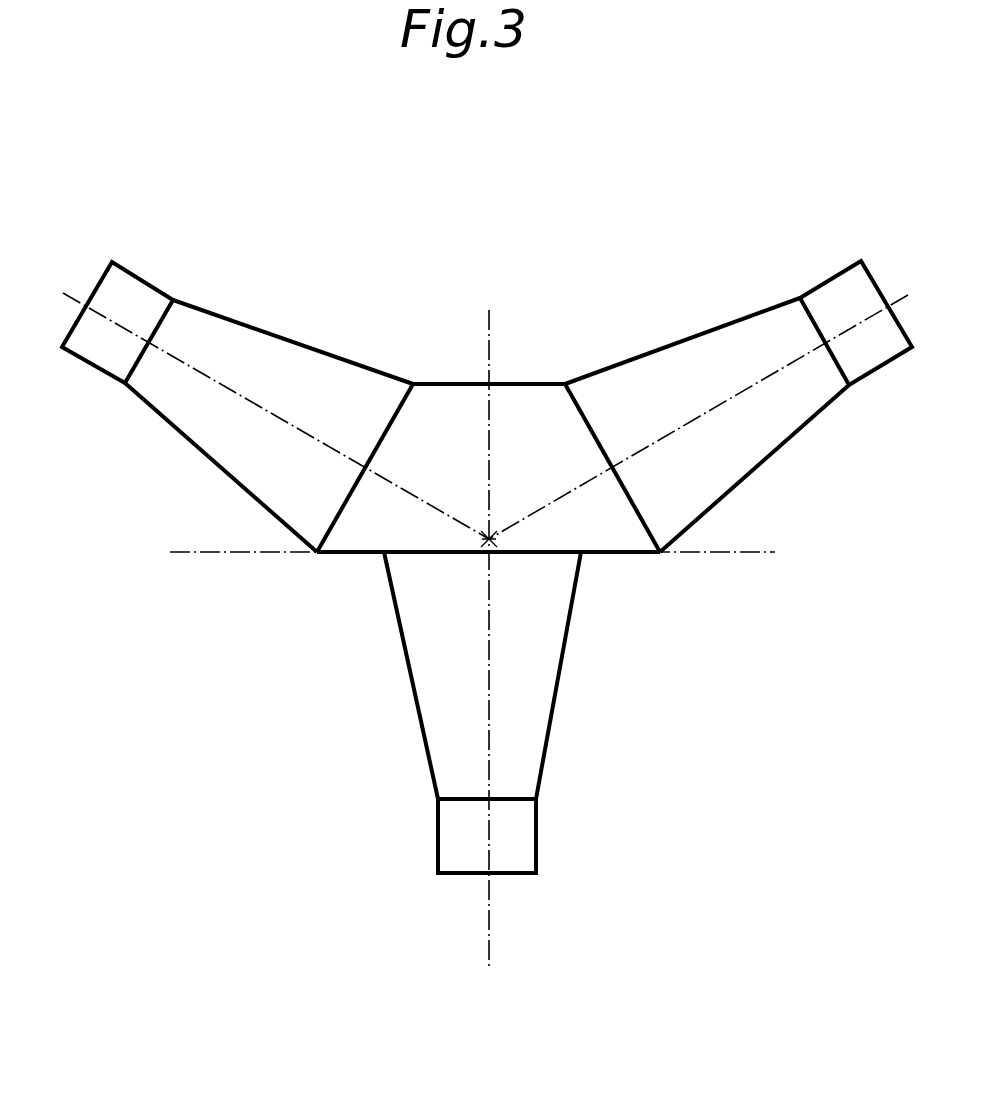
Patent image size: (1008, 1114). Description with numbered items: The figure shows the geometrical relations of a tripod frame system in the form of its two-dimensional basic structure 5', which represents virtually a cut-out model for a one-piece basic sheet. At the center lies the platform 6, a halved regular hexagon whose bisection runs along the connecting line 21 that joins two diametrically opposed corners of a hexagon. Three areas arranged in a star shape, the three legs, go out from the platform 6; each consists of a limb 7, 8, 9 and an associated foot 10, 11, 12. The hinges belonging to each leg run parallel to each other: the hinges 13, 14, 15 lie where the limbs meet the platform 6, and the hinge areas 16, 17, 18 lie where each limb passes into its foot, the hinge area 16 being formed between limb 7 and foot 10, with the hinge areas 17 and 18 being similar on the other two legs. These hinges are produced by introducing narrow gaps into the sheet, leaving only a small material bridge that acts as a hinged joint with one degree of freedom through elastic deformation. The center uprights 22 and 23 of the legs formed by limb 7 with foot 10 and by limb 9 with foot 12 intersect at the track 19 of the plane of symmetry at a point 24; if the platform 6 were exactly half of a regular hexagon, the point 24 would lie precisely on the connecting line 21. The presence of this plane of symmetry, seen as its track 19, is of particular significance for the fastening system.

The 2-dimensional basic structure 5' is at (576, 205).
The platform 6 is at (512, 400).
The limb 7 is at (290, 347).
The limb 8 is at (412, 640).
The limb 9 is at (682, 328).
The foot 10 is at (130, 285).
The foot 11 is at (445, 837).
The foot 12 is at (837, 288).
The hinge area 13 is at (396, 405).
The hinge 14 is at (523, 555).
The hinge 15 is at (577, 403).
The hinge area 16 is at (162, 327).
The hinge area 17 is at (503, 792).
The hinge area 18 is at (807, 315).
The track of the plane of symmetry 19 is at (492, 915).
The connecting line 21 is at (712, 555).
The center upright 22 is at (318, 440).
The center upright 23 is at (654, 443).
The point 24 is at (484, 533).